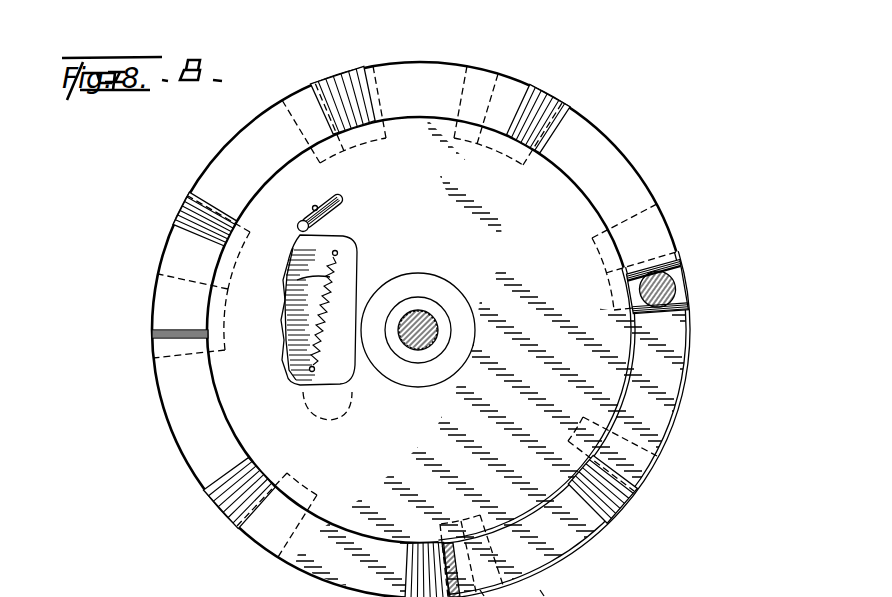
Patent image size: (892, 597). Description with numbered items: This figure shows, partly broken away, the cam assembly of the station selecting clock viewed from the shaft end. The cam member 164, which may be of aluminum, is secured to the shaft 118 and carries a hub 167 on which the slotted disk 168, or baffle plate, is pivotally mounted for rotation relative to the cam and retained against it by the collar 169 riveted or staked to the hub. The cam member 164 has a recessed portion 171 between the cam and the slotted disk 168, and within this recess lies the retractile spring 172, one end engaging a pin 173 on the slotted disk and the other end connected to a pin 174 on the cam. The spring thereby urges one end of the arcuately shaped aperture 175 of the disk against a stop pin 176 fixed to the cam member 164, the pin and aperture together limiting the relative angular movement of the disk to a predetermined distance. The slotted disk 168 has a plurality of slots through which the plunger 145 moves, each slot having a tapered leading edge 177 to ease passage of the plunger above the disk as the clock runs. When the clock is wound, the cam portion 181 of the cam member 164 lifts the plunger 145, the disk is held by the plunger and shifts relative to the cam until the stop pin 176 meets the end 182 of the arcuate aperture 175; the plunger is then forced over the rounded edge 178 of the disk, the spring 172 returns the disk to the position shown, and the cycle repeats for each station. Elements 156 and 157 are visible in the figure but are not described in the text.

The shaft 118 is at (427, 312).
The plunger 145 is at (680, 267).
The lower housing part 156 is at (554, 592).
The lower housing part 157 is at (494, 592).
The cam member 164 is at (638, 168).
The hub 167 is at (443, 316).
The slotted disk 168 is at (583, 158).
The collar 169 is at (466, 343).
The recessed portion 171 is at (308, 316).
The retractile spring 172 is at (306, 262).
The pin 173 is at (308, 382).
The pin 174 is at (336, 231).
The arcuately shaped aperture 175 is at (316, 206).
The stop pin 176 is at (299, 221).
The tapered leading edge 177 is at (367, 88).
The edge 178 is at (312, 95).
The cam portion 181 is at (330, 88).
The end of arcuate portion 182 is at (342, 195).